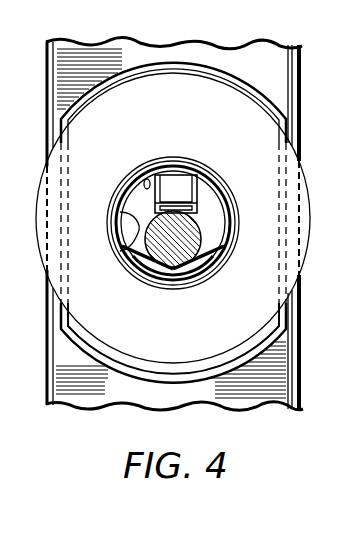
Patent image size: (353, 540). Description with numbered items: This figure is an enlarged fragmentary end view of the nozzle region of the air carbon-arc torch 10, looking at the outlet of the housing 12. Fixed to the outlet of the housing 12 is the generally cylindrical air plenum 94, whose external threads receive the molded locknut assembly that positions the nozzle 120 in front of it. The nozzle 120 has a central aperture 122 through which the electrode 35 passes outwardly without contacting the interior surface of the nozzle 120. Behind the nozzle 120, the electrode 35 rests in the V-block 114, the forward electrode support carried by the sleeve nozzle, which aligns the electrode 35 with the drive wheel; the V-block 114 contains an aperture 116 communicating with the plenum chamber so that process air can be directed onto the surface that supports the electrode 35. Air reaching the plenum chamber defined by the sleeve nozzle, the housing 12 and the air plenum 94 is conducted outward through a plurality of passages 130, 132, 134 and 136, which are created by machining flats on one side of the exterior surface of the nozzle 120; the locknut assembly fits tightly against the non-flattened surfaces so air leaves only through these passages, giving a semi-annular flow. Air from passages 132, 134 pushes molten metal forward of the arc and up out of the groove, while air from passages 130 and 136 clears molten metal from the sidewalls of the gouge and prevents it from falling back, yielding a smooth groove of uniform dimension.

The lock assembly 10 is at (313, 185).
The housing 12 is at (231, 49).
The air plenum 94 is at (250, 104).
The nozzle 120 is at (155, 167).
The central aperture 122 is at (144, 177).
The aperture 116 is at (198, 200).
The V-block 114 is at (120, 212).
The nozzle passage 136 is at (123, 258).
The nozzle passage 130 is at (229, 253).
The nozzle passage 134 is at (151, 290).
The nozzle passage 132 is at (198, 289).
The electrode 35 is at (183, 248).